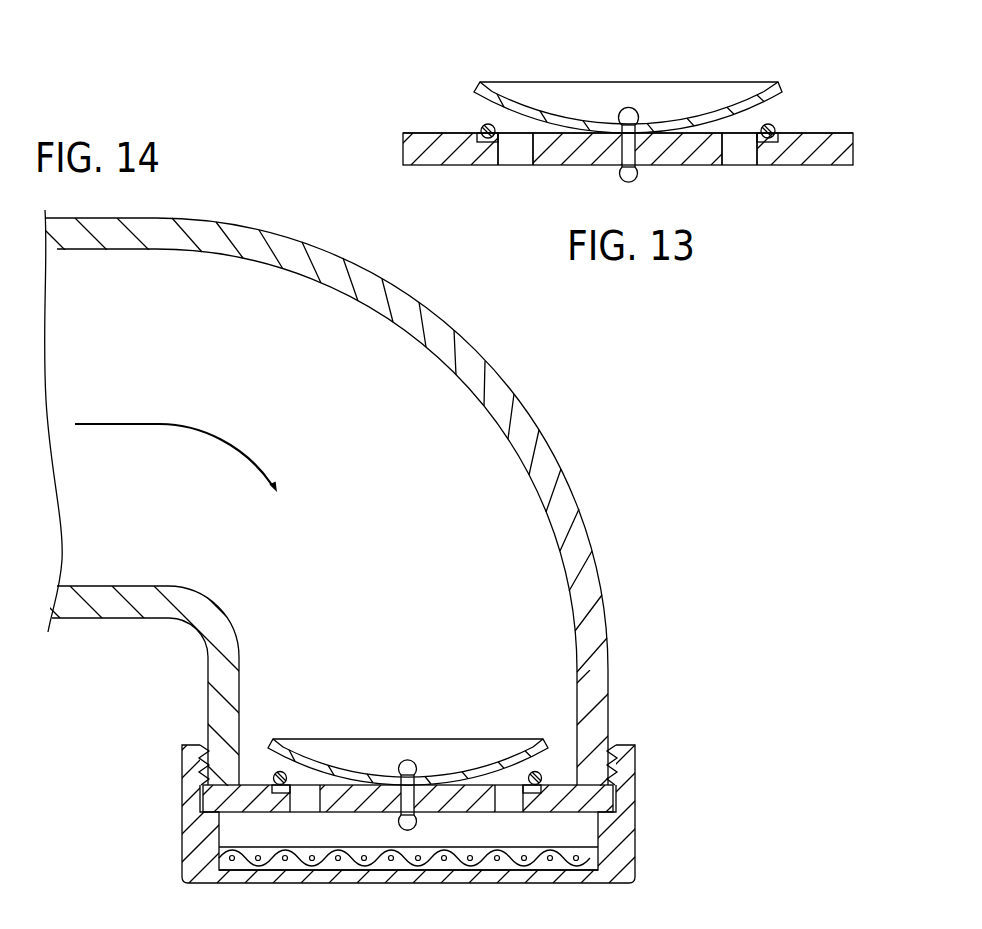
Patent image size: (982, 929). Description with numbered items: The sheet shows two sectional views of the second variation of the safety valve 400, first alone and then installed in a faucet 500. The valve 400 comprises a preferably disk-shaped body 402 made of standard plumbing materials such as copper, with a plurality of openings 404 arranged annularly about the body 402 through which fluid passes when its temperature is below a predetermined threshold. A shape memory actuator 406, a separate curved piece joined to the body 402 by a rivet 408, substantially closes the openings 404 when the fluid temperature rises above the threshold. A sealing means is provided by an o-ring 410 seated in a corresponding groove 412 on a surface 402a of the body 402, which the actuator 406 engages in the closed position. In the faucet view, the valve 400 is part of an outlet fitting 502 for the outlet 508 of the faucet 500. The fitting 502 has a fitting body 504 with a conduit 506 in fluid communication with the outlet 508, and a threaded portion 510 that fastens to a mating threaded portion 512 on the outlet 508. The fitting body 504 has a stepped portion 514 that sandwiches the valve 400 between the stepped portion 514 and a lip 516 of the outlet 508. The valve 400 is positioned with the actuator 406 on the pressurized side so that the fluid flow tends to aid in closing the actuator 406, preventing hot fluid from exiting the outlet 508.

In FIG. 13, the valve 400 is at (641, 109).
In FIG. 14, the valve 400 is at (483, 700).
In FIG. 13, the body 402 is at (832, 168).
In FIG. 14, the body 402 is at (409, 792).
In FIG. 13, the surface of the body 402a is at (458, 130).
In FIG. 13, the opening 404 is at (510, 160).
In FIG. 13, the shape memory actuator 406 is at (683, 82).
In FIG. 13, the rivet 408 is at (628, 173).
In FIG. 13, the o-ring 410 is at (770, 126).
In FIG. 13, the groove 412 is at (765, 143).
In FIG. 14, the faucet 500 is at (625, 402).
In FIG. 14, the outlet fitting 502 is at (672, 773).
In FIG. 14, the fitting body 504 is at (181, 804).
In FIG. 14, the conduit 506 is at (362, 842).
In FIG. 14, the outlet 508 is at (612, 678).
In FIG. 14, the threaded portion 510 is at (200, 770).
In FIG. 14, the mating threaded portion 512 is at (220, 740).
In FIG. 14, the stepped portion 514 is at (600, 815).
In FIG. 14, the lip 516 is at (588, 776).